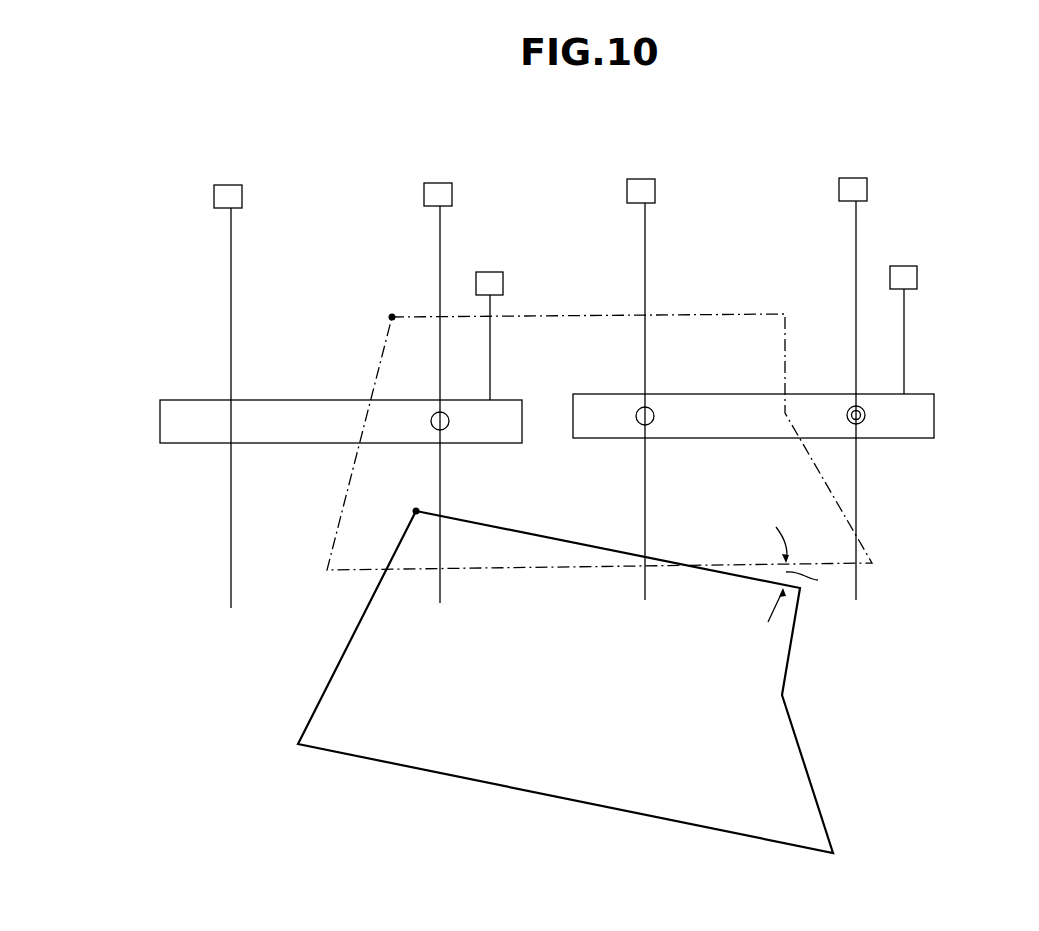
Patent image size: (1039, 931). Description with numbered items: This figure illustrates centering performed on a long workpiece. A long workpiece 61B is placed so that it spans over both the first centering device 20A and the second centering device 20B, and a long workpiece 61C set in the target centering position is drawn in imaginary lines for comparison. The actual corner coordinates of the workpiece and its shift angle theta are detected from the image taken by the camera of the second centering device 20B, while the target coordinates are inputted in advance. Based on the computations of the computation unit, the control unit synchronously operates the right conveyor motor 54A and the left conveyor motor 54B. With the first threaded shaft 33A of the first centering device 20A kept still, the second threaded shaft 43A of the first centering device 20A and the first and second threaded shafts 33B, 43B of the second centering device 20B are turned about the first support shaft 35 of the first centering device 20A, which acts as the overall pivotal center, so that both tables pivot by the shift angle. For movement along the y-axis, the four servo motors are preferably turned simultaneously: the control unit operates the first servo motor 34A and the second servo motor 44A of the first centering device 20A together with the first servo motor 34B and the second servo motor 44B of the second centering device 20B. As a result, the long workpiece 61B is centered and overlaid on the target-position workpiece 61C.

The first centering device 20A is at (771, 130).
The second centering device 20B is at (359, 131).
The first threaded shaft 33A is at (857, 235).
The first threaded shaft 33B is at (441, 237).
The first servo motor 34A is at (868, 188).
The first servo motor 34B is at (452, 192).
The first support shaft 35 is at (862, 420).
The second threaded shaft 43A is at (645, 248).
The second threaded shaft 43B is at (232, 250).
The second servo motor 44A is at (656, 190).
The second servo motor 44B is at (243, 197).
The right conveyor motor 54A is at (918, 280).
The left conveyor motor 54B is at (503, 282).
The long workpiece 61B is at (522, 792).
The long workpiece set in the target centering position 61C is at (737, 314).